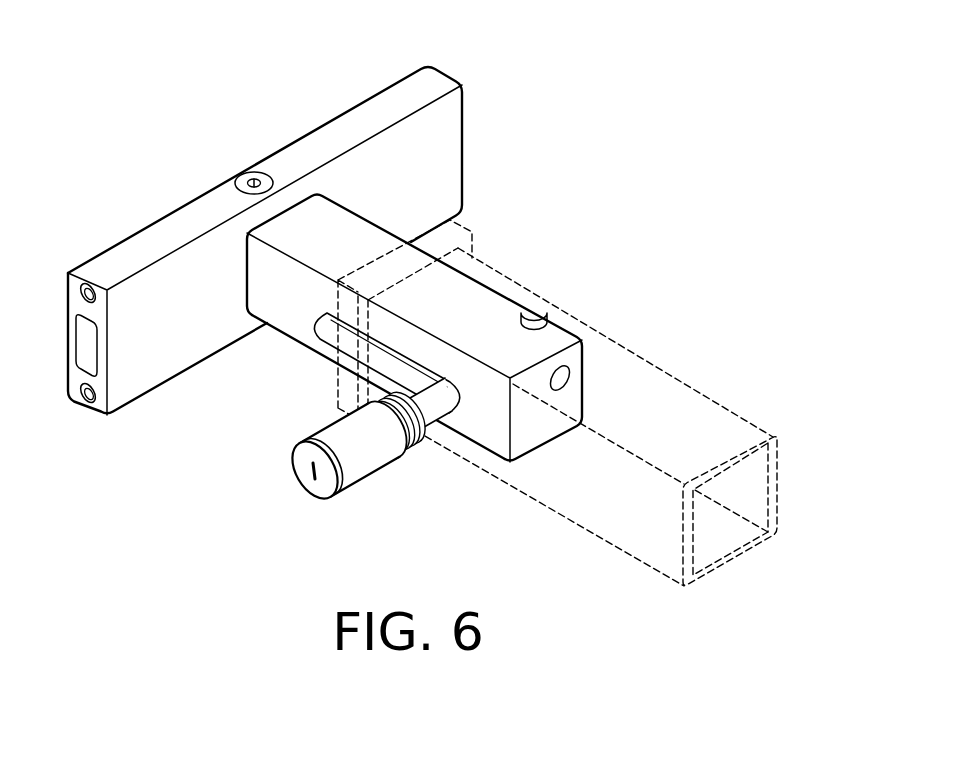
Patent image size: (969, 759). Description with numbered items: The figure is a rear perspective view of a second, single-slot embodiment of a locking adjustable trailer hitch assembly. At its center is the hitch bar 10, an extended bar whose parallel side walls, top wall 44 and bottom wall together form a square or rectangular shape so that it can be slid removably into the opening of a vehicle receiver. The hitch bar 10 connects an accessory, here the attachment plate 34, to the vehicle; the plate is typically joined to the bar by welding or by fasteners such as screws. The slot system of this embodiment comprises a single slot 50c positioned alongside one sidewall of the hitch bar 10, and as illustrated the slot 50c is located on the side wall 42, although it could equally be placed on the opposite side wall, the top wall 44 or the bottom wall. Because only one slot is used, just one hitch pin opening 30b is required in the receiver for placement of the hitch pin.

The hitch bar 10 is at (336, 244).
The attachment plate 34 is at (165, 237).
The top wall 44 is at (373, 237).
The slot 50c is at (334, 326).
The side wall 42 is at (327, 352).
The hitch pin opening 30b is at (412, 422).